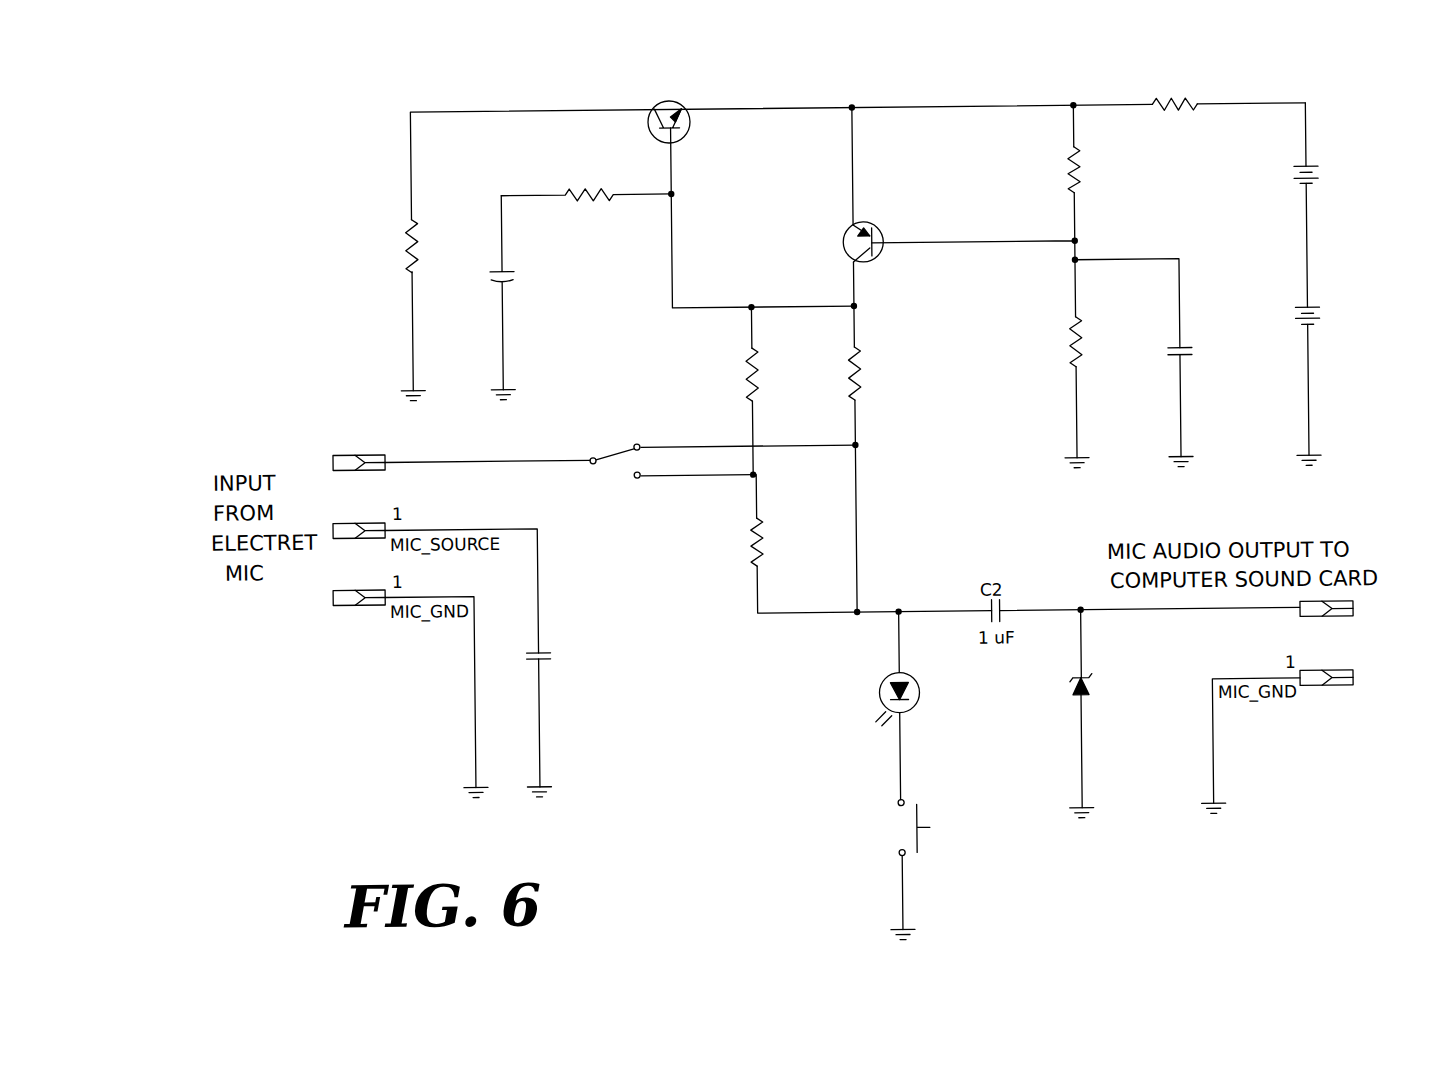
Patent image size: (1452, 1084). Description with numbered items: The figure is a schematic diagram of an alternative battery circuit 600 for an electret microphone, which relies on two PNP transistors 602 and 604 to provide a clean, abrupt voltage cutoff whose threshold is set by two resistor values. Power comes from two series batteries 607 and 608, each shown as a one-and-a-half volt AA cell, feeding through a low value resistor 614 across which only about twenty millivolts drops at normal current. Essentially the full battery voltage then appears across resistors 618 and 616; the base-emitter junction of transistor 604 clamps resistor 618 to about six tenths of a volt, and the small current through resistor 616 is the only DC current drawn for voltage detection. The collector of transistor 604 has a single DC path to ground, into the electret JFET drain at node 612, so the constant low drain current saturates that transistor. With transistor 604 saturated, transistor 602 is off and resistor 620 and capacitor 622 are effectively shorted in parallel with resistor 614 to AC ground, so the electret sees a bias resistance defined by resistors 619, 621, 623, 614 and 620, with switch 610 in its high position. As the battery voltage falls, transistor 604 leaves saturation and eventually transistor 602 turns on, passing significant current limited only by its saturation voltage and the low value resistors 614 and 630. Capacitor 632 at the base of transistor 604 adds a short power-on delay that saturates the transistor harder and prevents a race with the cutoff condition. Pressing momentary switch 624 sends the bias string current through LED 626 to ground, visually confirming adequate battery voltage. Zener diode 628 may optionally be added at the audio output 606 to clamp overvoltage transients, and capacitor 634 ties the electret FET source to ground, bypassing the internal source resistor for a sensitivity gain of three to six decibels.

The battery circuit 600 is at (718, 658).
The PNP transistor 602 is at (678, 140).
The PNP transistor 604 is at (844, 238).
The audio output 606 is at (1327, 621).
The series battery 607 is at (1299, 187).
The series battery 608 is at (1301, 310).
The switch 610 is at (627, 442).
The node 612 is at (344, 457).
The resistor 614 is at (1200, 108).
The resistor 616 is at (1085, 364).
The resistor 618 is at (1071, 168).
The resistor 619 is at (756, 365).
The resistor 620 is at (570, 192).
The resistor 621 is at (861, 378).
The capacitor 622 is at (503, 278).
The resistor 623 is at (752, 540).
The momentary switch 624 is at (930, 812).
The LED 626 is at (902, 678).
The zener diode 628 is at (1086, 692).
The resistor 630 is at (409, 257).
The capacitor 632 is at (1175, 351).
The capacitor 634 is at (538, 647).